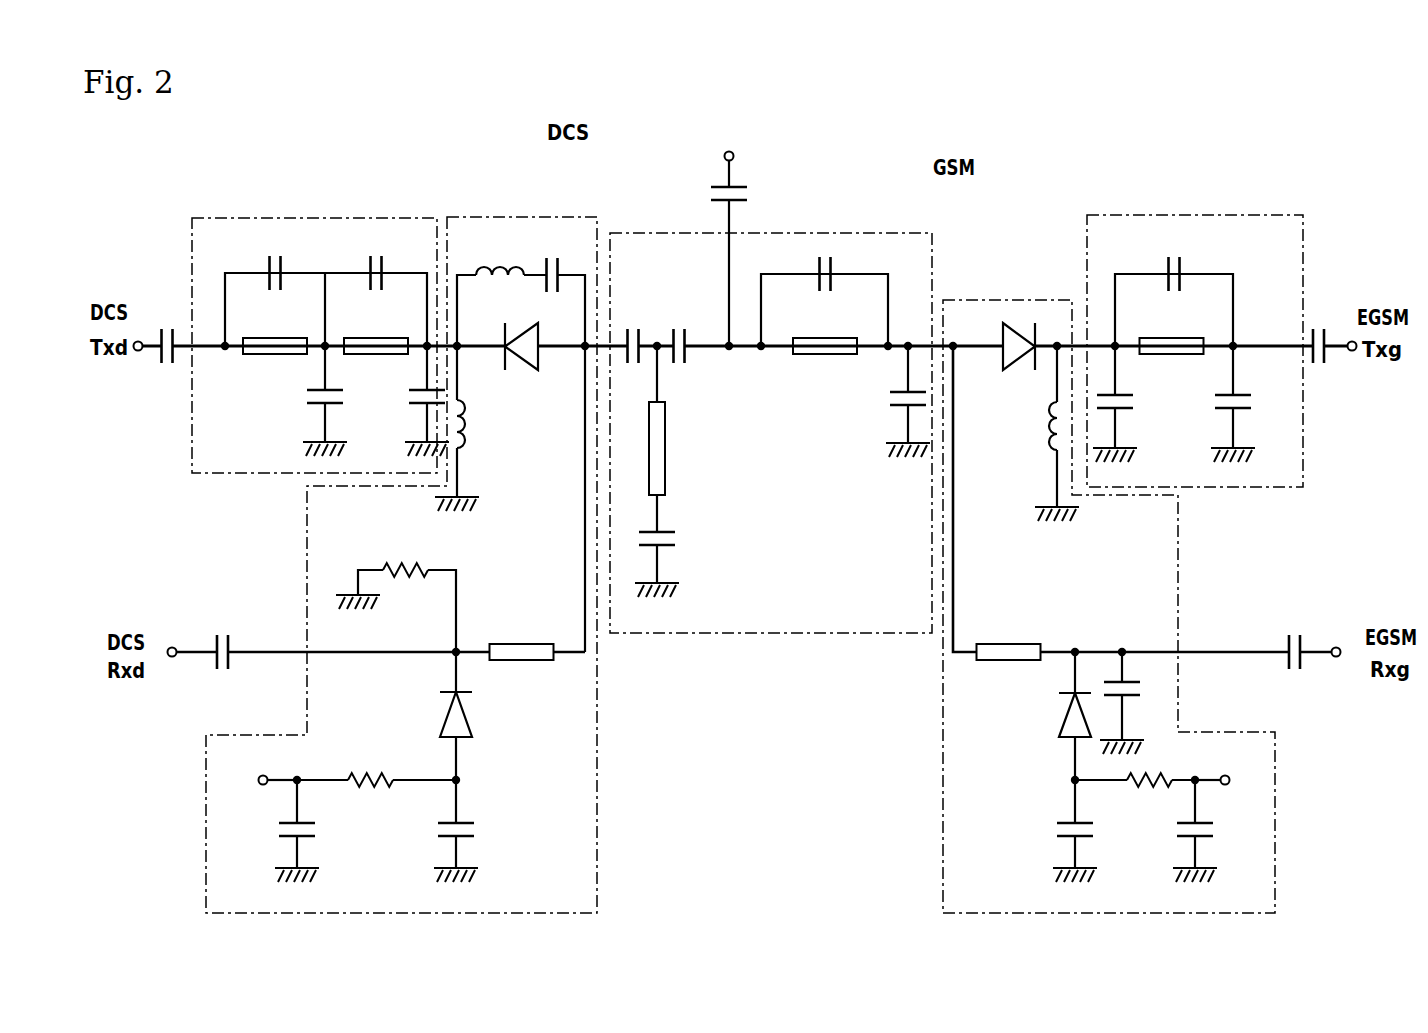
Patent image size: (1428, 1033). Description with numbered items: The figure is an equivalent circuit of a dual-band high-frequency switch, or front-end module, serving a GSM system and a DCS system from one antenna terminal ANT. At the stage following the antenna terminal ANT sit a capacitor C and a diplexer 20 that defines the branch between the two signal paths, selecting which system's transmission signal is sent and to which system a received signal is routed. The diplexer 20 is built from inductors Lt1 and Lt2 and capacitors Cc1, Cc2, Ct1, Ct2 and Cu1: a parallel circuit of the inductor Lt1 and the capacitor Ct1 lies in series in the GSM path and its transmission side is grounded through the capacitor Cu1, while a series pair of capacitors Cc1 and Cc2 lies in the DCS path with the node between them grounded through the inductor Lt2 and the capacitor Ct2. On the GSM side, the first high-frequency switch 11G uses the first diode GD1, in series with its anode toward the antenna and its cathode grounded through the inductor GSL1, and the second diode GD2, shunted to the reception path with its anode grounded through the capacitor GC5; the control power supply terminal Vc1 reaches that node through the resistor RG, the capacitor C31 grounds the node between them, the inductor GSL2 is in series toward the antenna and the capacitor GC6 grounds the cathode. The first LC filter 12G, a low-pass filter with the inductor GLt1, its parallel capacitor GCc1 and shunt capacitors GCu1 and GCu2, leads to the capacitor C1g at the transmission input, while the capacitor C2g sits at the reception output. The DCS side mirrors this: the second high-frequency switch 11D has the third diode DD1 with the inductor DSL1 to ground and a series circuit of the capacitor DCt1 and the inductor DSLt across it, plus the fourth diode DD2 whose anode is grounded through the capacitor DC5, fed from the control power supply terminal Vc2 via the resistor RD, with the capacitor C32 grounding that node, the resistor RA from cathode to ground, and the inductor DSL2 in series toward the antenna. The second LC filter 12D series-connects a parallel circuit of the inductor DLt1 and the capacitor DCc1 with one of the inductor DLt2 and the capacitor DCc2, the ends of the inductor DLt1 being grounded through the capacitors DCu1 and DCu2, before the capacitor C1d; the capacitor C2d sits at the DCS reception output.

The second LC filter 12D is at (345, 217).
The second high-frequency switch 11D is at (477, 217).
The diplexer 20 is at (780, 232).
The first high-frequency switch 11G is at (980, 299).
The first LC filter 12G is at (1183, 214).
The capacitor C1d is at (169, 331).
The capacitor C2d is at (226, 635).
The capacitor DCc2 is at (273, 259).
The capacitor DCc1 is at (377, 259).
The inductor DLt2 is at (275, 362).
The inductor DLt1 is at (376, 362).
The capacitor DCu2 is at (299, 401).
The capacitor DCu1 is at (402, 401).
The inductor DSLt is at (493, 252).
The capacitor DCt1 is at (552, 258).
The third diode DD1 is at (518, 360).
The inductor DSL1 is at (483, 428).
The inductor DSL2 is at (522, 667).
The fourth diode DD2 is at (477, 716).
The capacitor DC5 is at (474, 831).
The resistor RA is at (396, 607).
The resistor RD is at (376, 797).
The capacitor C32 is at (278, 831).
The control power supply terminal Vc2 is at (257, 780).
The antenna terminal ANT is at (758, 243).
The capacitor C is at (719, 194).
The capacitor Cc2 is at (632, 331).
The capacitor Cc1 is at (682, 331).
The capacitor Ct1 is at (826, 291).
The inductor Lt1 is at (825, 360).
The capacitor Cu1 is at (890, 401).
The inductor Lt2 is at (679, 439).
The capacitor Ct2 is at (677, 563).
The first diode GD1 is at (1024, 361).
The inductor GSL1 is at (1032, 433).
The capacitor GCc1 is at (1172, 291).
The inductor GLt1 is at (1172, 361).
The ground capacitor GCu1 is at (1142, 404).
The ground capacitor GCu2 is at (1257, 404).
The capacitor C1g is at (1326, 334).
The inductor GSL2 is at (1009, 668).
The second diode GD2 is at (1053, 716).
The capacitor GC6 is at (1135, 703).
The resistor RG is at (1135, 797).
The control power supply terminal Vc1 is at (1233, 780).
The capacitor GC5 is at (1057, 831).
The capacitor C31 is at (1214, 831).
The capacitor C2g is at (1296, 635).